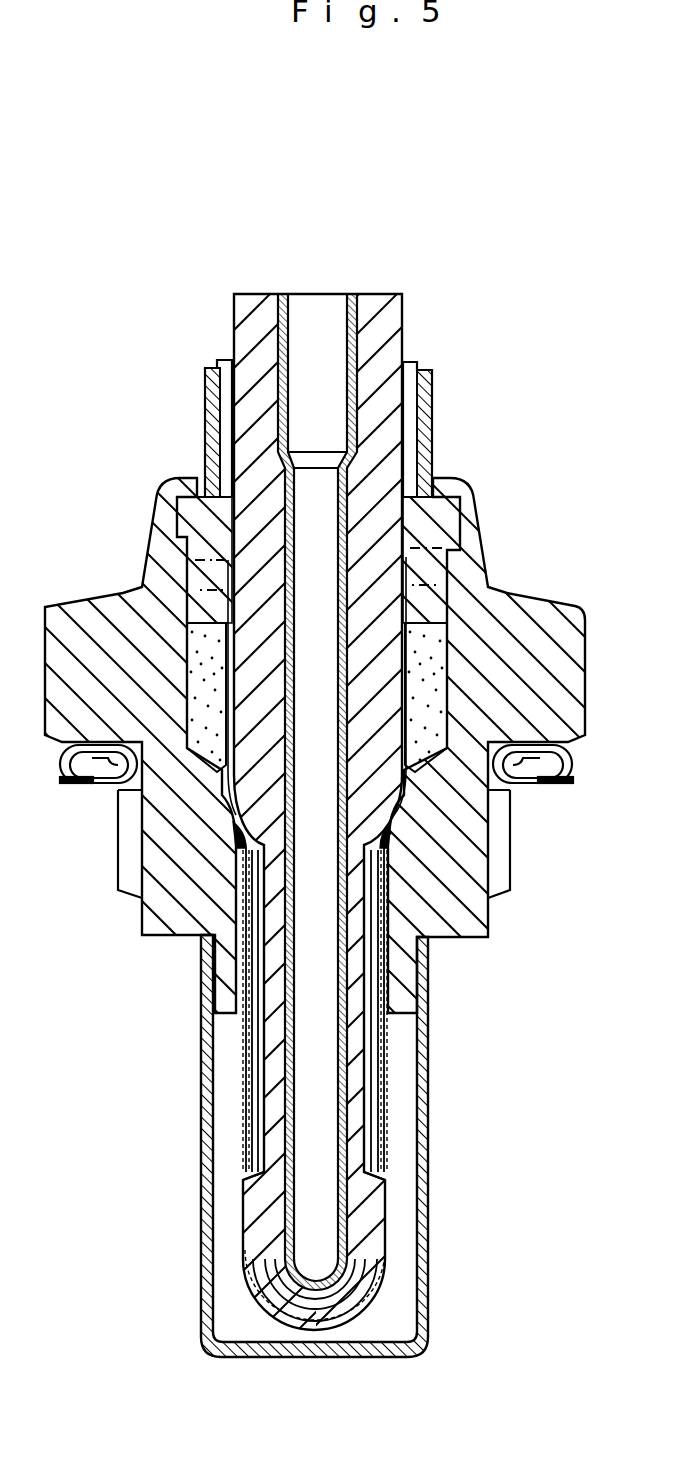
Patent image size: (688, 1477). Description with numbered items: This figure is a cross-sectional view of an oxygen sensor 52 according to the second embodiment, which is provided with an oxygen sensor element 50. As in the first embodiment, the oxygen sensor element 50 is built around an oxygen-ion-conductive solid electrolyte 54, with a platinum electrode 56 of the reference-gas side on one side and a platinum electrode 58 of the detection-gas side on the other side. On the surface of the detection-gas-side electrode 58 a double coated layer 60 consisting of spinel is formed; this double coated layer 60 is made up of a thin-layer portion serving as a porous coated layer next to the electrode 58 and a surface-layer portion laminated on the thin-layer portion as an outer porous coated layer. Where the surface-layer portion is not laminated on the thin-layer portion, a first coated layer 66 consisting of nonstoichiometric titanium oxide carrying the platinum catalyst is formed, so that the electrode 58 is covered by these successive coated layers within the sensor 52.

The oxygen sensor element 50 is at (380, 287).
The oxygen sensor 52 is at (400, 182).
The oxygen-ion-conductive solid electrolyte 54 is at (383, 320).
The reference-gas-side Pt electrode 56 is at (284, 340).
The detection-gas-side Pt electrode 58 is at (387, 1032).
The double coated layer 60 is at (375, 1052).
The first coated layer 66 is at (368, 1100).